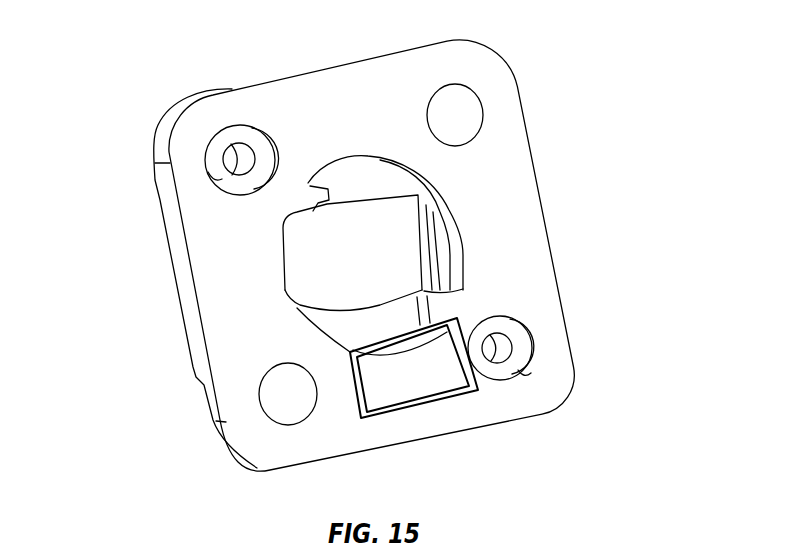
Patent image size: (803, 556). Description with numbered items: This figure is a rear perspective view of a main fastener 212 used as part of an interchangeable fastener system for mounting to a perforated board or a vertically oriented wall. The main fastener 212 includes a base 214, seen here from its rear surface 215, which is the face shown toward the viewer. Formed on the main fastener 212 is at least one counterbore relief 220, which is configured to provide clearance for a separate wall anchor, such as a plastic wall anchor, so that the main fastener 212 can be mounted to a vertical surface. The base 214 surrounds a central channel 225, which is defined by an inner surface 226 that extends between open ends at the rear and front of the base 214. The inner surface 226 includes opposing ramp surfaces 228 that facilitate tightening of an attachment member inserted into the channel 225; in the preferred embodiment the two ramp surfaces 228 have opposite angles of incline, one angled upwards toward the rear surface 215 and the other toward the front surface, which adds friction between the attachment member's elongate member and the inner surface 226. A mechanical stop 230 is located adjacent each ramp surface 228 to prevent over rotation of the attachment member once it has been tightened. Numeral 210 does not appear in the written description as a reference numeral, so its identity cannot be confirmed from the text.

The main fastener 212 is at (590, 77).
The base 214 is at (557, 277).
The rear surface 215 is at (500, 188).
The fastener boss 210 is at (215, 177).
The counterbore relief 220 is at (520, 371).
The channel 225 is at (384, 255).
The inner surface 226 is at (463, 245).
The ramp surface 228 is at (353, 173).
The mechanical stop 230 is at (427, 307).